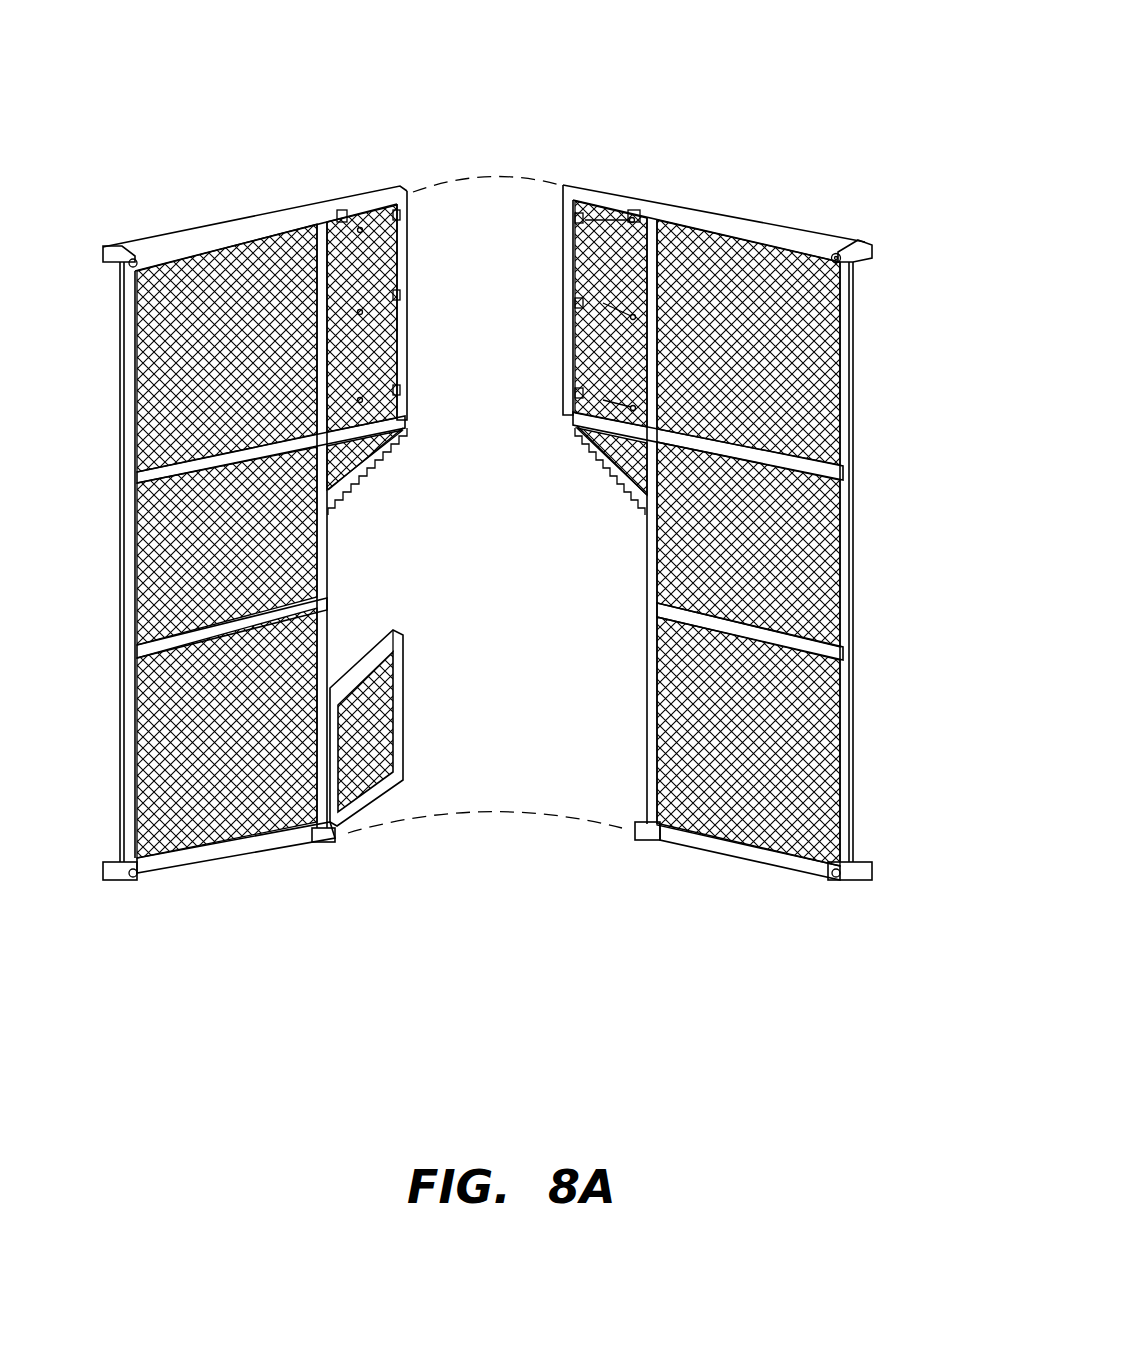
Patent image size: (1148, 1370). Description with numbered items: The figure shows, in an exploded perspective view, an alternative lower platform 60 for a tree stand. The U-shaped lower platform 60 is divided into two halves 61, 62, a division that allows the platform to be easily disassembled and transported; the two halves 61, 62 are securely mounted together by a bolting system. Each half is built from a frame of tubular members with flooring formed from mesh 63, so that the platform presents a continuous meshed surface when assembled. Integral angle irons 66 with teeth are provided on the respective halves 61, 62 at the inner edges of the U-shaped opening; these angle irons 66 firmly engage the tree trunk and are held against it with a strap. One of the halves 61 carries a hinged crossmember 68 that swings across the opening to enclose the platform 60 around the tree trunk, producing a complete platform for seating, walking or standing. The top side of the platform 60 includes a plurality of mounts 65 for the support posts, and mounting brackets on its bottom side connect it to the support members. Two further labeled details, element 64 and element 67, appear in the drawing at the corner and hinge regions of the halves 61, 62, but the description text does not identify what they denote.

The lower platform 60 is at (803, 95).
The half of the lower platform 61 is at (223, 228).
The half of the lower platform 62 is at (773, 227).
The mesh 63 is at (150, 588).
The hinge 64 is at (838, 262).
The mounts 65 is at (867, 242).
The angle irons 66 is at (370, 458).
The hinge plate 67 is at (333, 207).
The hinged crossmember 68 is at (398, 726).